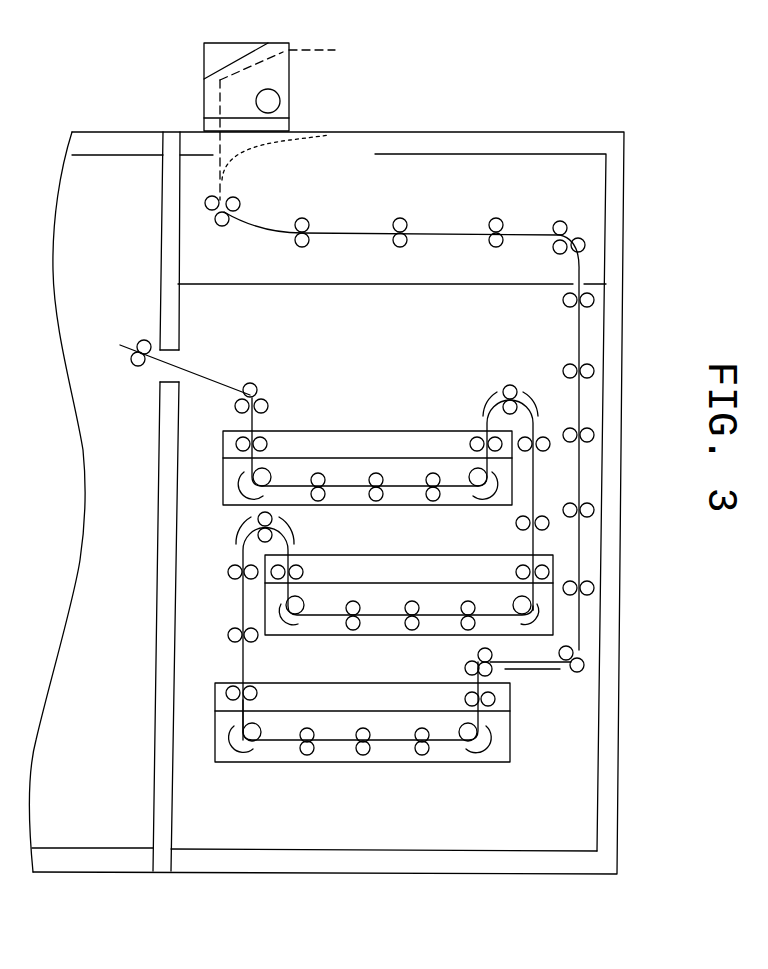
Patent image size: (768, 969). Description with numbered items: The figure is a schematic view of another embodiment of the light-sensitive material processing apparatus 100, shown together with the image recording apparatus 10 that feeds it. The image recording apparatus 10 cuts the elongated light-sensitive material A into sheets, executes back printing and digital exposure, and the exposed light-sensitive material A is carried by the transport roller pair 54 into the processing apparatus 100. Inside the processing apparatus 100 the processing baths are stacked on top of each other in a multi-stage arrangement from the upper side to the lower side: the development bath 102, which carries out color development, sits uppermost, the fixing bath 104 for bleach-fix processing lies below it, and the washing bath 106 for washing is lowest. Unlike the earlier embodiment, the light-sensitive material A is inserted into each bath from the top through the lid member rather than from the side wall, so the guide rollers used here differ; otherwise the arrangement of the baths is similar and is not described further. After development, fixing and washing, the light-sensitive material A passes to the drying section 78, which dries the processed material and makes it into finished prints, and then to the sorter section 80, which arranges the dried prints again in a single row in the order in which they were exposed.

The image recording apparatus 10 is at (115, 112).
The light-sensitive material processing apparatus 100 is at (490, 110).
The sorter section 80 is at (335, 97).
The drying section 78 is at (383, 213).
The transport roller pair 54 is at (135, 363).
The light-sensitive material A is at (210, 375).
The development bath 102 is at (357, 442).
The fixing bath 104 is at (405, 568).
The washing bath 106 is at (368, 698).